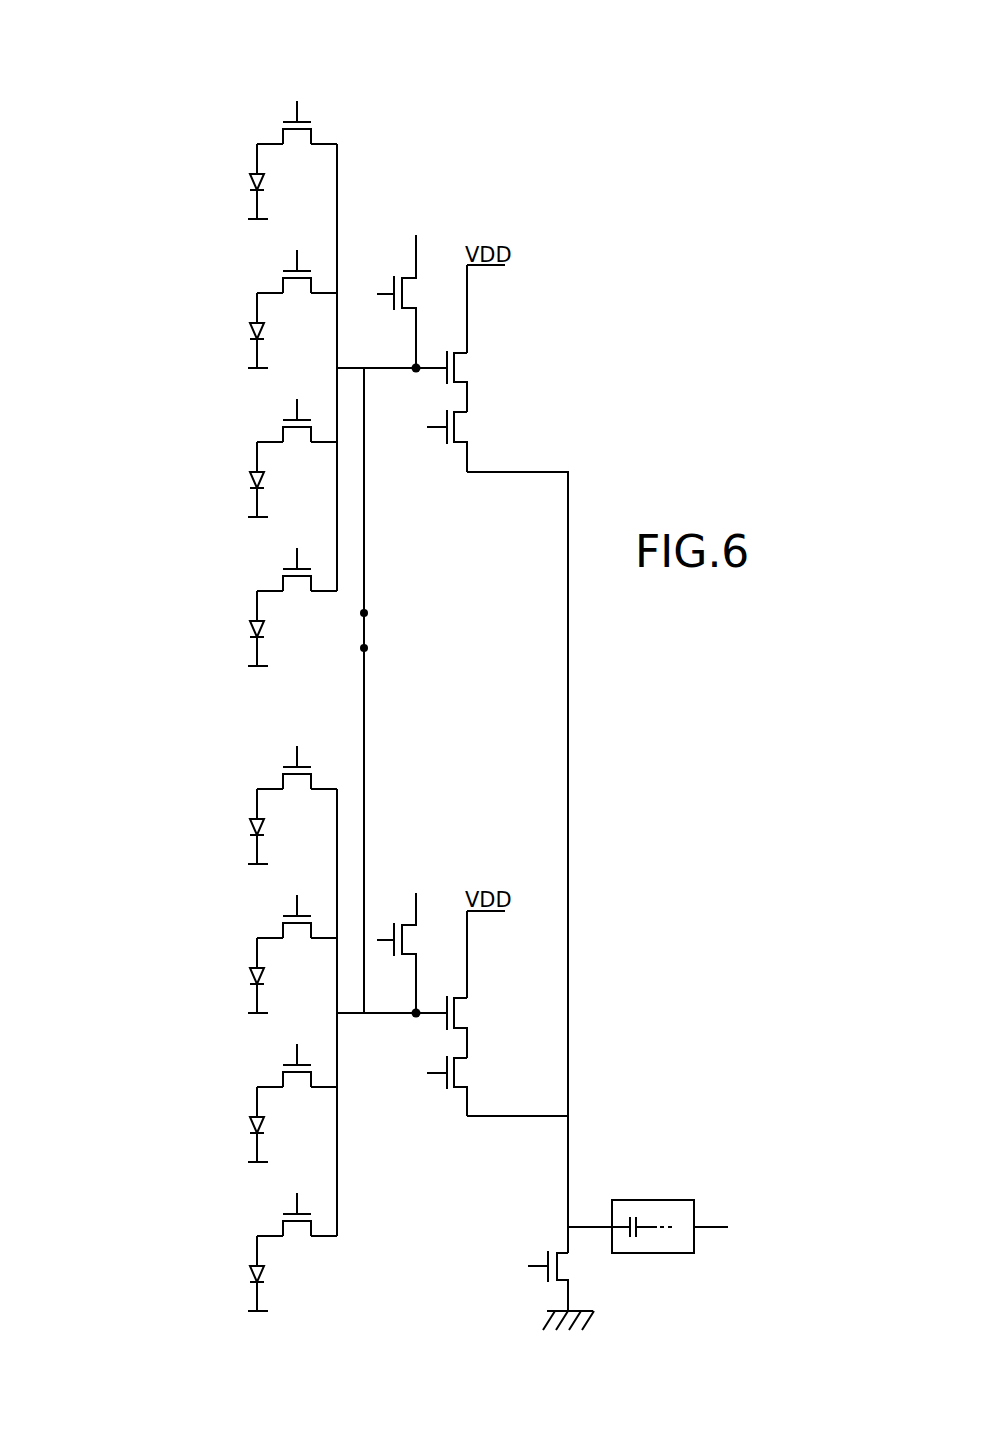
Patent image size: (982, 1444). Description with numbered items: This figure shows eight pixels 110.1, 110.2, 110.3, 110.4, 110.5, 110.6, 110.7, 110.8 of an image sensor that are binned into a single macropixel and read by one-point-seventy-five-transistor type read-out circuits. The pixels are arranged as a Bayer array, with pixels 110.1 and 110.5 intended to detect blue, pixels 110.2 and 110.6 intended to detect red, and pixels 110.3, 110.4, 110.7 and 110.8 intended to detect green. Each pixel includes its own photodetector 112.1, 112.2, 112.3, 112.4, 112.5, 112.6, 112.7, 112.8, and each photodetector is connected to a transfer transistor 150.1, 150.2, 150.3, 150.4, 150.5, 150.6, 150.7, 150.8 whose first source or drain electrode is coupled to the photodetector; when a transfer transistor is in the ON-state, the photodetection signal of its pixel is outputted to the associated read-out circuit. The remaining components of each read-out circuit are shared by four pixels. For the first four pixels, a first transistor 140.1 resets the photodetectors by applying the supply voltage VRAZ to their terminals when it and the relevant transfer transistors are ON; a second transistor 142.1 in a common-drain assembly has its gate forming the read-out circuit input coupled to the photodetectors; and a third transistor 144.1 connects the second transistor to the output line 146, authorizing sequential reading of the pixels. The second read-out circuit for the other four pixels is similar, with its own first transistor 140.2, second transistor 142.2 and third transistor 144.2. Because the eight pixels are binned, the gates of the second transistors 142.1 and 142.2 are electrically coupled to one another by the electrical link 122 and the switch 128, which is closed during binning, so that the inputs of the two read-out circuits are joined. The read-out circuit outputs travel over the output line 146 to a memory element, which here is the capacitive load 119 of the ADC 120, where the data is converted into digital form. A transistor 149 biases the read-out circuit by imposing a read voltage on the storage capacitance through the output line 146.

The pixel 110.1 is at (276, 128).
The pixel 110.2 is at (193, 304).
The pixel 110.3 is at (193, 453).
The pixel 110.4 is at (193, 602).
The pixel 110.5 is at (193, 800).
The pixel 110.6 is at (193, 949).
The pixel 110.7 is at (193, 1098).
The pixel 110.8 is at (193, 1247).
The photodetector 112.1 is at (198, 181).
The photodetector 112.2 is at (198, 330).
The photodetector 112.3 is at (198, 479).
The photodetector 112.4 is at (198, 628).
The photodetector 112.5 is at (198, 826).
The photodetector 112.6 is at (198, 975).
The photodetector 112.7 is at (198, 1124).
The photodetector 112.8 is at (198, 1273).
The transfer transistor 150.1 is at (352, 116).
The transfer transistor 150.2 is at (232, 267).
The transfer transistor 150.3 is at (232, 416).
The transfer transistor 150.4 is at (232, 565).
The transfer transistor 150.5 is at (232, 763).
The transfer transistor 150.6 is at (232, 912).
The transfer transistor 150.7 is at (232, 1061).
The transfer transistor 150.8 is at (232, 1210).
The first transistor 140.1 is at (405, 276).
The first transistor 140.2 is at (408, 920).
The second transistor 142.1 is at (457, 363).
The second transistor 142.2 is at (457, 1008).
The third transistor 144.1 is at (457, 427).
The third transistor 144.2 is at (457, 1073).
The switch 128 is at (365, 630).
The electrical link 122 is at (365, 713).
The output line 146 is at (568, 692).
The transistor 149 is at (560, 1291).
The ADC 120 is at (630, 1203).
The capacitive load 119 is at (640, 1230).